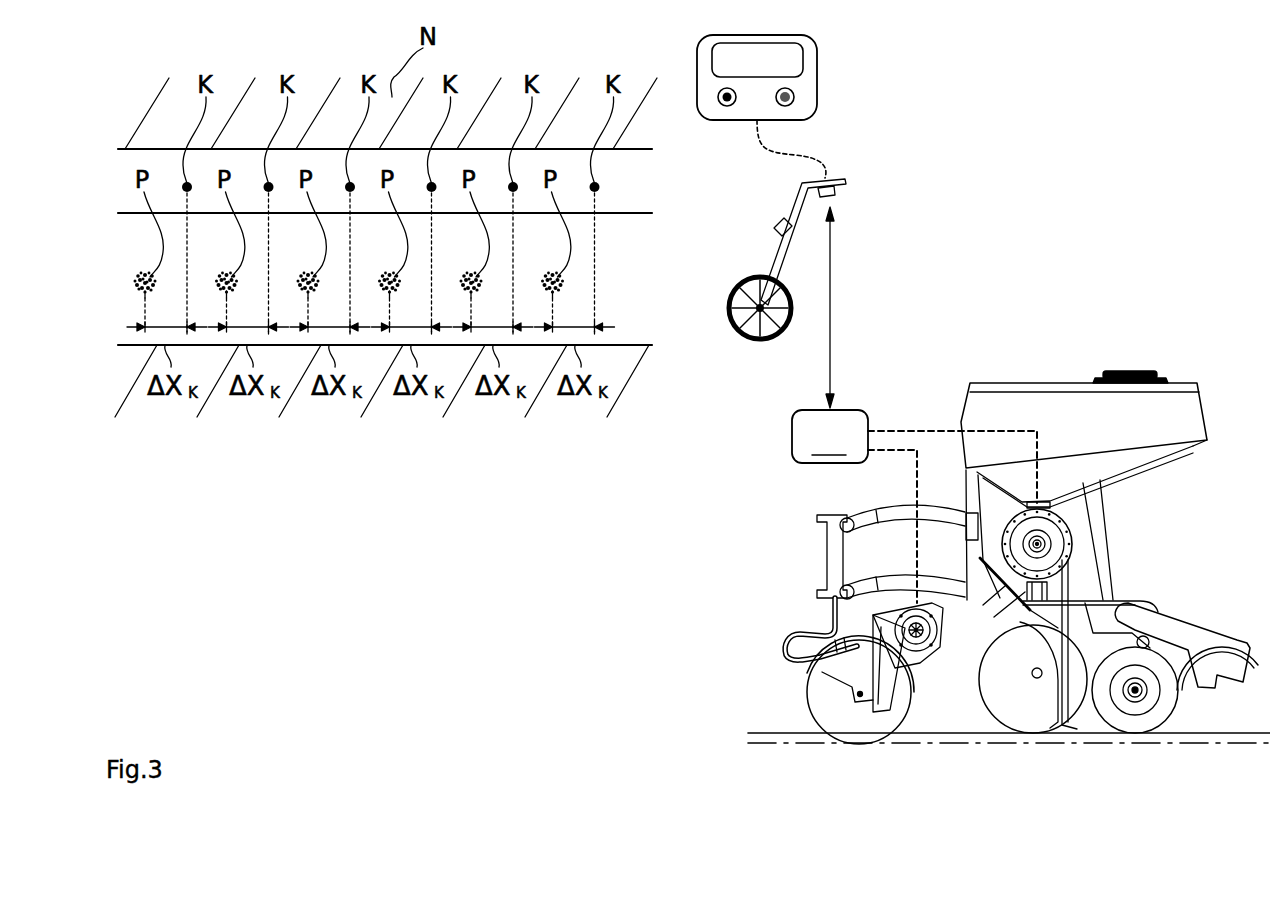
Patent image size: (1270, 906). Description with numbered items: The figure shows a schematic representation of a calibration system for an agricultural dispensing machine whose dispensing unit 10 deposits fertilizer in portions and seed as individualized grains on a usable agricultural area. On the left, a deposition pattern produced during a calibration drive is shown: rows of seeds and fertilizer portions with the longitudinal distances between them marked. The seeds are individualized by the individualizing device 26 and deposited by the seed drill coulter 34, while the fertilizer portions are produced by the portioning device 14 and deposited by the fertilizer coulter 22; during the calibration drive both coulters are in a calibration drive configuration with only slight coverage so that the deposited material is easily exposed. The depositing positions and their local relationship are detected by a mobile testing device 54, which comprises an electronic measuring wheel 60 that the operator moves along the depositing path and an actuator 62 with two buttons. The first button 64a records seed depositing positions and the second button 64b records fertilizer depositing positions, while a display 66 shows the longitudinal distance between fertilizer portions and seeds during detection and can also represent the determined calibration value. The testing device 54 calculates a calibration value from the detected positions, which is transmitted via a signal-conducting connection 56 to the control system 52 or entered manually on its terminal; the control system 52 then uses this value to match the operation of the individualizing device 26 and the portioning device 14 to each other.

The dispensing unit 10 is at (1009, 539).
The portioning device 14 is at (934, 656).
The fertilizer coulter 22 is at (837, 707).
The individualizing device 26 is at (1076, 533).
The seed drill coulter 34 is at (1020, 698).
The control system 52 is at (914, 506).
The mobile testing device 54 is at (848, 283).
The signal-conducting connection 56 is at (832, 300).
The electronic measuring wheel 60 is at (760, 341).
The actuator 62 is at (697, 58).
The first button 64a is at (723, 106).
The second button 64b is at (796, 94).
The display 66 is at (797, 58).